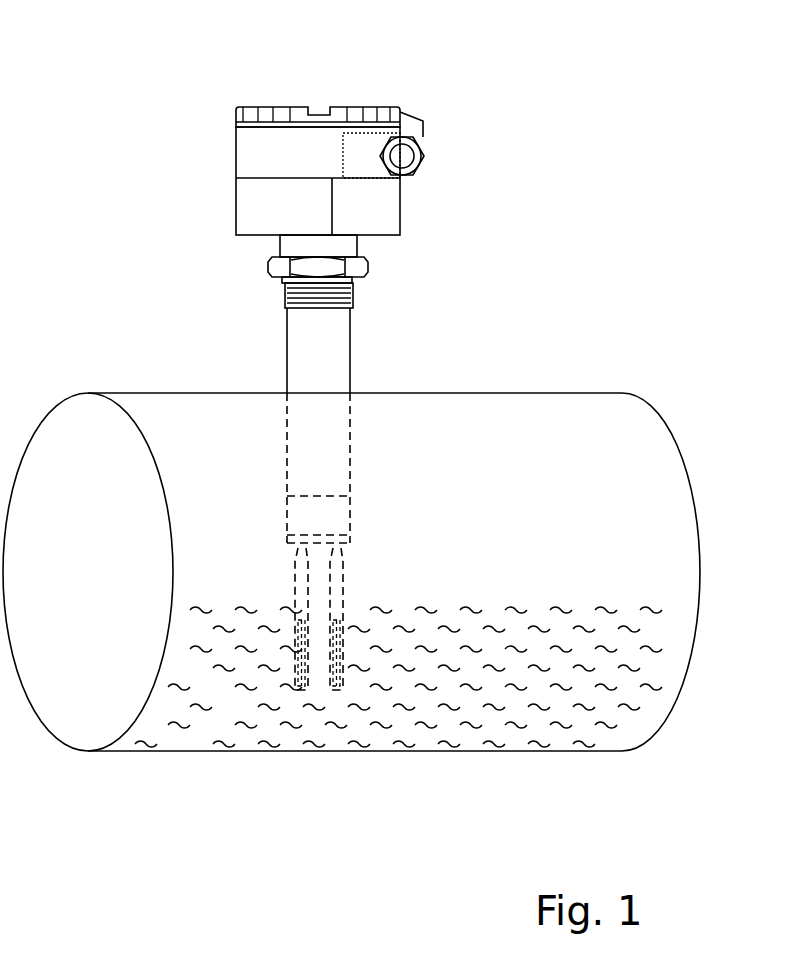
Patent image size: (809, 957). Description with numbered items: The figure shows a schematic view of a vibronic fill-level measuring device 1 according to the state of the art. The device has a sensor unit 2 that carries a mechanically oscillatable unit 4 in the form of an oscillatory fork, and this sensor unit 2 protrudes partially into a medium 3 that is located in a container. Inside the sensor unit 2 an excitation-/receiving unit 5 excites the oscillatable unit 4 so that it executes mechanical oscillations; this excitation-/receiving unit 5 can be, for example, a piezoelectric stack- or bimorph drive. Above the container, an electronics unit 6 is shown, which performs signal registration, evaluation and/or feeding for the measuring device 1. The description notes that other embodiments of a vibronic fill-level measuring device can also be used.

The vibronic fill-level measuring device 1 is at (291, 430).
The sensor unit 2 is at (398, 604).
The medium 3 is at (651, 731).
The mechanically oscillatable unit 4 is at (319, 698).
The excitation-/receiving unit 5 is at (330, 520).
The electronics unit 6 is at (384, 212).